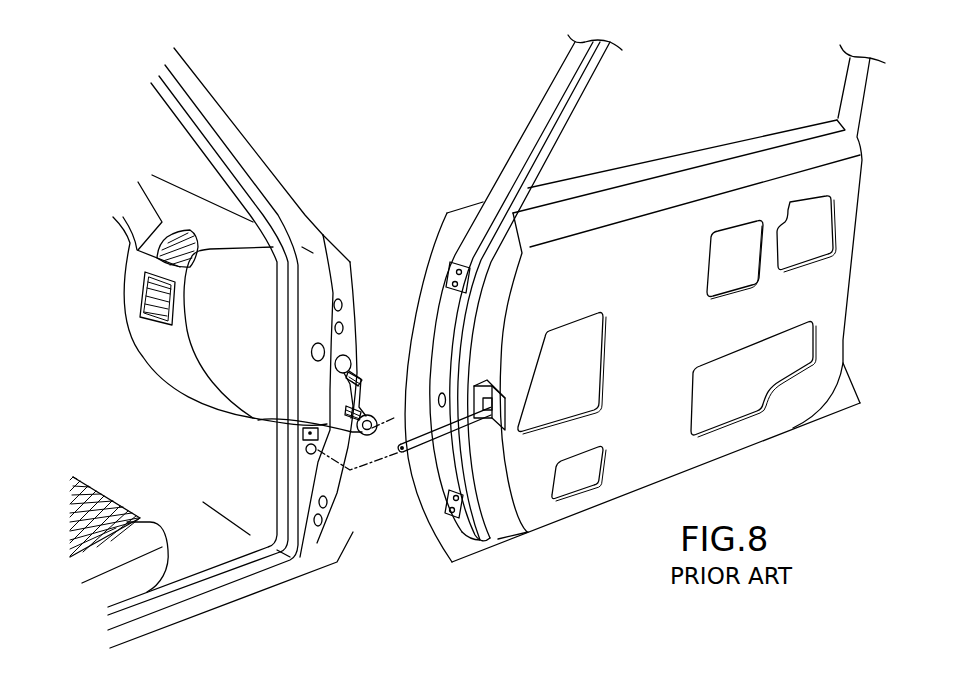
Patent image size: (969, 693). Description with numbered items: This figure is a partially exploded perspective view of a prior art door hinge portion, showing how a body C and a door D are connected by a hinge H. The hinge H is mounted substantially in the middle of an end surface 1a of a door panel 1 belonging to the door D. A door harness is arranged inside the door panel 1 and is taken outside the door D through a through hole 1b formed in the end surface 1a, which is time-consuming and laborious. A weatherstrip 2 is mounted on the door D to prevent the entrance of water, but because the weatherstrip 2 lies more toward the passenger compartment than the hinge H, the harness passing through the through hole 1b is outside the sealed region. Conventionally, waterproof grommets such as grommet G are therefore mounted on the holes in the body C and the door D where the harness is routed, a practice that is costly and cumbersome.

The body C is at (258, 140).
The door D is at (628, 298).
The door panel 1 is at (852, 280).
The end surface 1a is at (448, 243).
The through hole 1b is at (441, 392).
The hinge H is at (452, 270).
The grommet G is at (258, 420).
The weatherstrip 2 is at (480, 512).